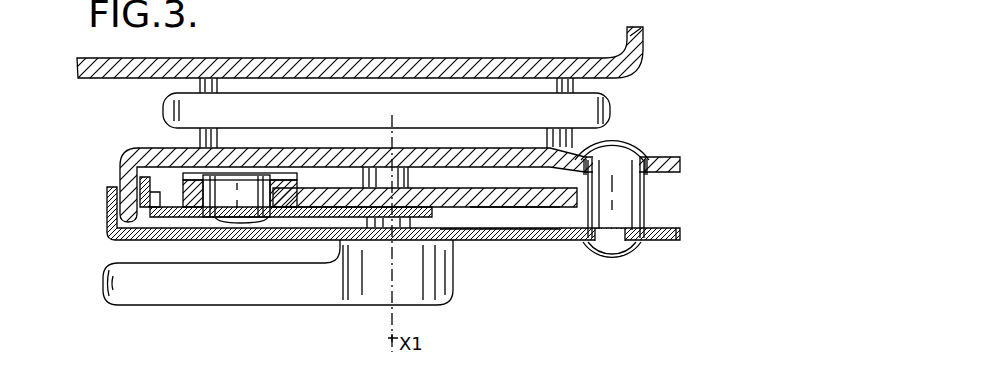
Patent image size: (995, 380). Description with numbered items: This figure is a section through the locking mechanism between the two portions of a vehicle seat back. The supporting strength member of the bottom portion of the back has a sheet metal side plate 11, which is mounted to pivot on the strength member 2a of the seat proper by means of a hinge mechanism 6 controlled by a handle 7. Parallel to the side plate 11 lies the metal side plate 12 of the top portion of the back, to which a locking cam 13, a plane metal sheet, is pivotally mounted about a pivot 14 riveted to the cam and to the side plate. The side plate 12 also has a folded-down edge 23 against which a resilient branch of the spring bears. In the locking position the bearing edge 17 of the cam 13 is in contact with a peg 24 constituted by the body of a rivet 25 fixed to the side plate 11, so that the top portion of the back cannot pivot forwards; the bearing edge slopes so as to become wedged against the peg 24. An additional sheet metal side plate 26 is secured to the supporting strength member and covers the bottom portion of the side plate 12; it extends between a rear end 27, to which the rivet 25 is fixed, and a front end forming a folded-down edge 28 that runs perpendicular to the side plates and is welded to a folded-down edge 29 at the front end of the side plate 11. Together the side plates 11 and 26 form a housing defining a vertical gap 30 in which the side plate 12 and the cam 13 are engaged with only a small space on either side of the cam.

The strength member of the seat proper 2a is at (561, 72).
The hinge mechanism 6 is at (568, 115).
The handle 7 is at (308, 300).
The side plate 11 is at (364, 192).
The side plate 12 is at (300, 212).
The locking cam 13 is at (465, 198).
The pivot 14 is at (235, 198).
The bearing edge 17 is at (590, 200).
The folded-down edge 23 is at (156, 200).
The peg 24 is at (615, 188).
The rivet 25 is at (620, 256).
The additional sheet metal side plate 26 is at (520, 242).
The rear end 27 is at (678, 242).
The folded-down edge 28 is at (108, 208).
The folded-down edge 29 is at (128, 172).
The vertical gap 30 is at (548, 212).